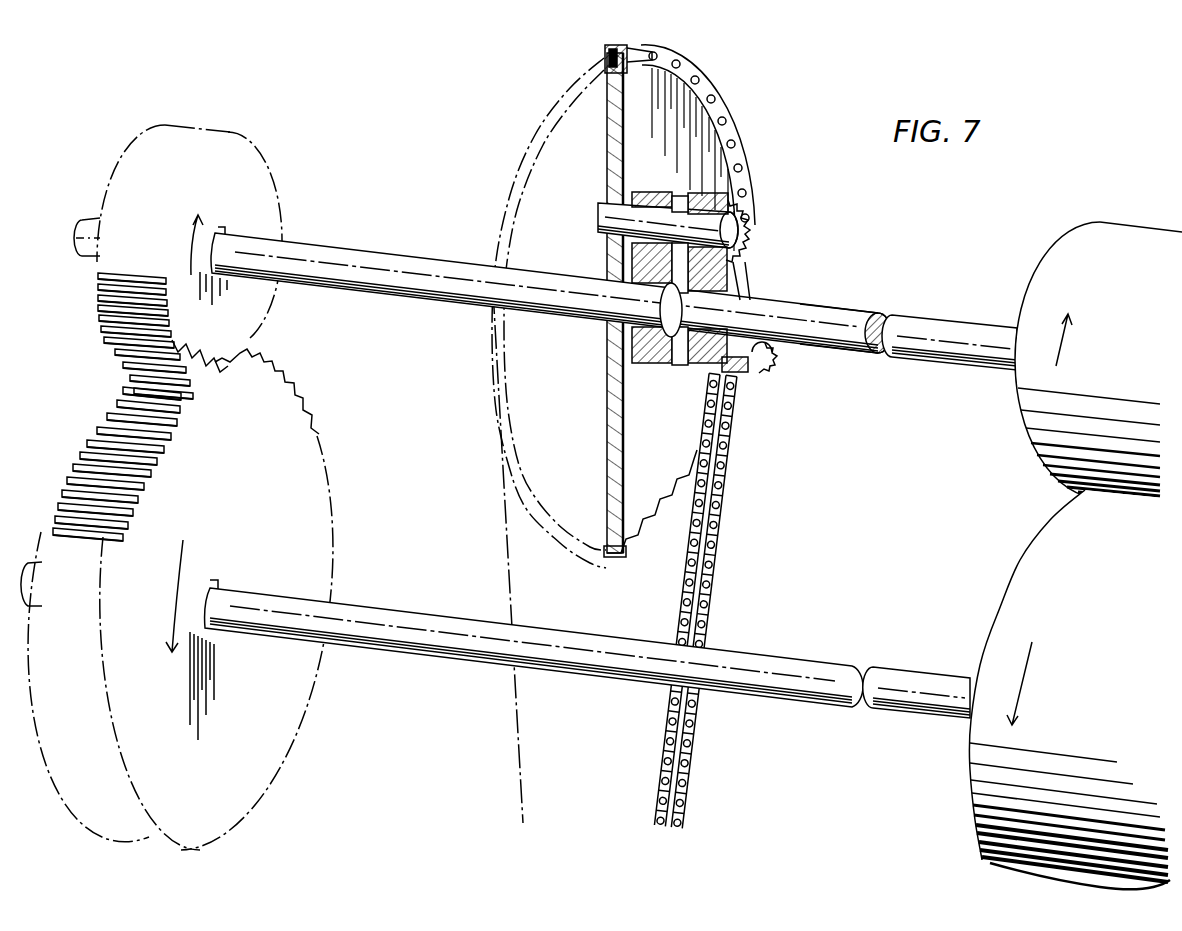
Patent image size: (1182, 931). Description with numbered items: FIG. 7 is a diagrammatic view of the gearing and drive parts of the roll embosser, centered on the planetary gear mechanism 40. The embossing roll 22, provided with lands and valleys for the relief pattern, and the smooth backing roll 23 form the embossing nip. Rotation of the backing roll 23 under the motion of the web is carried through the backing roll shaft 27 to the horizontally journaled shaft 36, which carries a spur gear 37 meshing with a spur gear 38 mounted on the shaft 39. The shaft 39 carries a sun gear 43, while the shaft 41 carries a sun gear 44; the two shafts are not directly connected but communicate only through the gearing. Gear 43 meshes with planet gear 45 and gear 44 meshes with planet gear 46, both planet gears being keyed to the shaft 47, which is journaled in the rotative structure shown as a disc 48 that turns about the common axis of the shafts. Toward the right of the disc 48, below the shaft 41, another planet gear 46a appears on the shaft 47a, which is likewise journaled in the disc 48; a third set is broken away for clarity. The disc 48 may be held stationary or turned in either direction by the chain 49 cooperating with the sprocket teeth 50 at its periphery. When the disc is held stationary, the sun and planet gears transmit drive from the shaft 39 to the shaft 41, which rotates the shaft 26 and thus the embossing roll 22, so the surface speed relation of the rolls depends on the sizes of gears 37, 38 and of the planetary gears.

The embossing roll 22 is at (1080, 257).
The backing roll 23 is at (1040, 567).
The shaft of the embossing roll 26 is at (970, 357).
The backing roll shaft 27 is at (937, 650).
The shaft 36 is at (418, 648).
The spur gear 37 is at (90, 432).
The spur gear 38 is at (100, 296).
The shaft 39 is at (333, 258).
The planetary gear mechanism 40 is at (768, 127).
The shaft 41 is at (840, 322).
The sun gear 43 is at (653, 348).
The sun gear 44 is at (740, 376).
The planet gear 45 is at (653, 190).
The planet gear 46 is at (747, 215).
The planet gear 46a is at (777, 367).
The shaft 47 is at (603, 218).
The shaft 47a is at (762, 348).
The disc 48 is at (648, 118).
The chain 49 is at (713, 548).
The sprocket teeth 50 is at (660, 547).